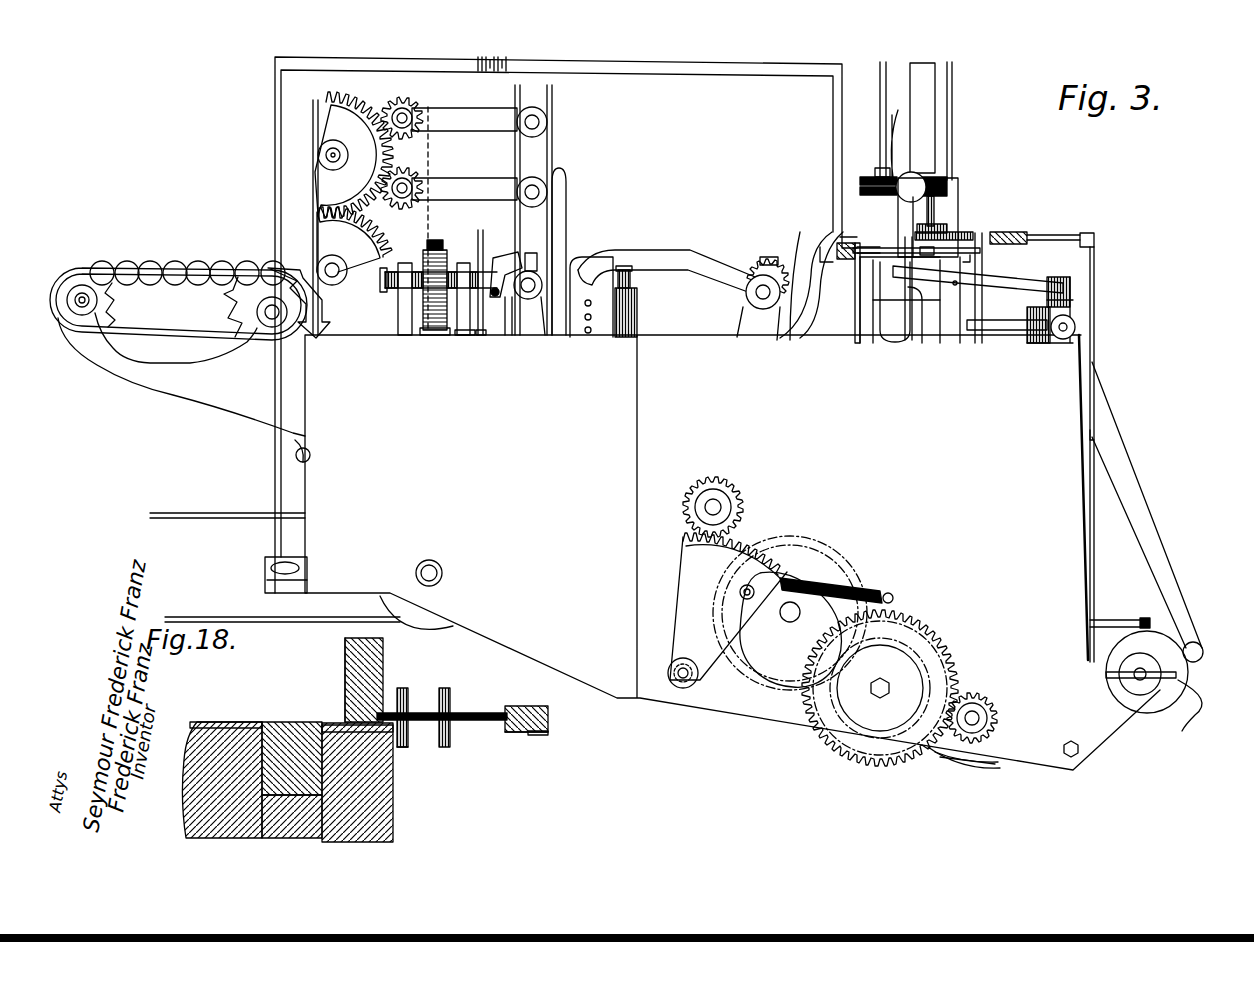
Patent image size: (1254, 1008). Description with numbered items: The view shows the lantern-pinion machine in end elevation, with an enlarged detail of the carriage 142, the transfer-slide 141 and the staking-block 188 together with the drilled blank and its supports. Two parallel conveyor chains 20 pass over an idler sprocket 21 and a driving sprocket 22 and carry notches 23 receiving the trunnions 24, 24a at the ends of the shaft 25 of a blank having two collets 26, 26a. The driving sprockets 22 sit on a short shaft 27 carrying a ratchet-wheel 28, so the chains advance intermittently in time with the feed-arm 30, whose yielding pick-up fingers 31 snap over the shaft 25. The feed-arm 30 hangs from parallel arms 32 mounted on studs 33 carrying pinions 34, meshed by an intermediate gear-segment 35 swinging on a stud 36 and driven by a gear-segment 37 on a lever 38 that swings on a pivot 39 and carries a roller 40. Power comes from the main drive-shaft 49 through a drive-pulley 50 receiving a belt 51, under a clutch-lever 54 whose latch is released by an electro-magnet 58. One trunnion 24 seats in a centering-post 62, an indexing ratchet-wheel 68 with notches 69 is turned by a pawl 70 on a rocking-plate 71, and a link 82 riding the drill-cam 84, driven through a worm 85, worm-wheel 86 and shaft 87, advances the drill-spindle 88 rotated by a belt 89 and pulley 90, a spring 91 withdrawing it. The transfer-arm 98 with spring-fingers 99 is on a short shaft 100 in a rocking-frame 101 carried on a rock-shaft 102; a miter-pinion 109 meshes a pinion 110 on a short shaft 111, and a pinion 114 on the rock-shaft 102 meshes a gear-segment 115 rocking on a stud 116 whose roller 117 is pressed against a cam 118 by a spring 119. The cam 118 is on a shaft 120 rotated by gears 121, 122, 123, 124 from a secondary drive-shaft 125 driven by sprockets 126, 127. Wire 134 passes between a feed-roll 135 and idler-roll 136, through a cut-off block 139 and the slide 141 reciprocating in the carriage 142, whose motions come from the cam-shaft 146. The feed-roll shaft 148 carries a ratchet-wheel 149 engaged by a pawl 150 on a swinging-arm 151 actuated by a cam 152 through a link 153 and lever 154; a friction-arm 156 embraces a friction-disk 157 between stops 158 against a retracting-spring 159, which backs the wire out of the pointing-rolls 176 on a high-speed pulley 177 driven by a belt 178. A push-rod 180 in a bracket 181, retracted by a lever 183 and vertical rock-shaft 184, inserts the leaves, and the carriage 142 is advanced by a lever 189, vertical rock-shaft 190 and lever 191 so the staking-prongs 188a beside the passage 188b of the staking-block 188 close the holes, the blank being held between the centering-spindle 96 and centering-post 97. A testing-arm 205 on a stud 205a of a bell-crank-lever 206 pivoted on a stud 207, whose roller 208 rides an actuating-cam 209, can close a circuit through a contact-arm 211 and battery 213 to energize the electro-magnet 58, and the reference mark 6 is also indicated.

In FIG. 3, the conveyor chains 20 is at (133, 333).
In FIG. 3, the idler sprocket 21 is at (112, 288).
In FIG. 3, the driving sprocket 22 is at (240, 318).
In FIG. 3, the notches 23 is at (168, 340).
In FIG. 3, the trunnion 24 is at (127, 272).
In FIG. 18, the trunnion 24 is at (383, 690).
In FIG. 3, the collet 26 is at (104, 261).
In FIG. 18, the collet 26 is at (402, 747).
In FIG. 3, the short shaft 27 is at (270, 330).
In FIG. 3, the ratchet-wheel 28 is at (227, 305).
In FIG. 3, the feed-arm 30 is at (560, 180).
In FIG. 3, the yielding pick-up fingers 31 is at (530, 257).
In FIG. 3, the parallel arms 32 is at (478, 123).
In FIG. 3, the studs 33 is at (420, 108).
In FIG. 3, the pinions 34 is at (404, 117).
In FIG. 3, the intermediate gear-segment 35 is at (330, 112).
In FIG. 3, the stud 36 is at (327, 163).
In FIG. 3, the gear-segment 37 is at (327, 243).
In FIG. 3, the lever 38 is at (333, 328).
In FIG. 3, the pivot 39 is at (333, 278).
In FIG. 3, the roller 40 is at (303, 463).
In FIG. 3, the main drive-shaft 49 is at (442, 571).
In FIG. 3, the drive-pulley 50 is at (432, 622).
In FIG. 3, the belt 51 is at (277, 622).
In FIG. 3, the clutch-lever 54 is at (267, 572).
In FIG. 3, the electro-magnet 58 is at (295, 577).
In FIG. 3, the centering-post 62 is at (522, 335).
In FIG. 3, the indexing ratchet-wheel 68 is at (492, 335).
In FIG. 3, the notches 69 is at (517, 253).
In FIG. 3, the pawl 70 is at (577, 257).
In FIG. 3, the rocking-plate 71 is at (603, 317).
In FIG. 3, the link 82 is at (467, 337).
In FIG. 3, the drill-cam 84 is at (480, 227).
In FIG. 3, the worm 85 is at (440, 267).
In FIG. 3, the worm-wheel 86 is at (423, 242).
In FIG. 3, the shaft 87 is at (390, 295).
In FIG. 3, the drill-spindle 88 is at (547, 335).
In FIG. 3, the belt 89 is at (552, 97).
In FIG. 3, the pulley 90 is at (530, 335).
In FIG. 3, the spring 91 is at (480, 336).
In FIG. 3, the transfer-arm 98 is at (663, 257).
In FIG. 3, the spring-fingers 99 is at (577, 267).
In FIG. 3, the short shaft 100 is at (760, 293).
In FIG. 3, the rocking-frame 101 is at (750, 322).
In FIG. 3, the rock-shaft 102 is at (715, 507).
In FIG. 3, the miter-pinion 109 is at (783, 340).
In FIG. 3, the pinion 110 is at (757, 270).
In FIG. 3, the short shaft 111 is at (768, 255).
In FIG. 3, the pinion 114 is at (733, 527).
In FIG. 3, the gear-segment 115 is at (687, 553).
In FIG. 3, the stud 116 is at (680, 685).
In FIG. 3, the roller 117 is at (747, 595).
In FIG. 3, the cam 118 is at (787, 667).
In FIG. 3, the spring 119 is at (873, 588).
In FIG. 3, the shaft 120 is at (797, 603).
In FIG. 3, the gear 121 is at (807, 555).
In FIG. 3, the gear 122 is at (877, 718).
In FIG. 3, the gear 123 is at (902, 742).
In FIG. 3, the gear 124 is at (952, 738).
In FIG. 3, the secondary drive-shaft 125 is at (976, 719).
In FIG. 3, the sprocket 126 is at (965, 768).
In FIG. 3, the sprocket 127 is at (957, 760).
In FIG. 3, the wire 134 is at (960, 178).
In FIG. 3, the feed-roll 135 is at (952, 190).
In FIG. 3, the idler-roll 136 is at (858, 180).
In FIG. 3, the cut-off block 139 is at (958, 173).
In FIG. 3, the combined leaf cut-off and transfer-slide 141 is at (928, 85).
In FIG. 18, the combined leaf cut-off and transfer-slide 141 is at (283, 727).
In FIG. 3, the carriage 142 is at (940, 337).
In FIG. 18, the carriage 142 is at (215, 743).
In FIG. 3, the cam-shaft 146 is at (1143, 680).
In FIG. 3, the shaft 148 is at (962, 203).
In FIG. 3, the ratchet-wheel 149 is at (940, 232).
In FIG. 3, the pawl 150 is at (937, 225).
In FIG. 3, the swinging-arm 151 is at (947, 237).
In FIG. 3, the cam 152 is at (1166, 707).
In FIG. 3, the link 153 is at (1063, 235).
In FIG. 3, the lever 154 is at (1086, 378).
In FIG. 3, the friction-arm 156 is at (880, 250).
In FIG. 3, the friction-disk 157 is at (980, 257).
In FIG. 3, the stops 158 is at (850, 317).
In FIG. 3, the retracting-spring 159 is at (882, 170).
In FIG. 3, the pointing-rolls 176 is at (898, 170).
In FIG. 3, the high-speed pulley 177 is at (950, 157).
In FIG. 3, the belt 178 is at (880, 77).
In FIG. 3, the push-rod 180 is at (917, 333).
In FIG. 3, the bracket 181 is at (928, 337).
In FIG. 3, the lever 183 is at (1073, 297).
In FIG. 3, the vertical rock-shaft 184 is at (1073, 280).
In FIG. 3, the lever 189 is at (1003, 345).
In FIG. 3, the vertical rock-shaft 190 is at (1073, 305).
In FIG. 3, the lever 191 is at (1106, 620).
In FIG. 3, the testing-arm 205 is at (887, 273).
In FIG. 3, the stud 205a is at (963, 278).
In FIG. 3, the bell-crank-lever 206 is at (1133, 493).
In FIG. 3, the stud 207 is at (1080, 327).
In FIG. 3, the roller 208 is at (1201, 647).
In FIG. 3, the actuating-cam 209 is at (1195, 709).
In FIG. 3, the contact-arm 211 is at (847, 237).
In FIG. 3, the battery 213 is at (487, 80).
In FIG. 3, the section line 6 is at (890, 263).
In FIG. 18, the shaft 25 is at (490, 713).
In FIG. 18, the collet 26a is at (452, 692).
In FIG. 18, the trunnion 24a is at (513, 733).
In FIG. 18, the centering-spindle 96 is at (533, 736).
In FIG. 18, the centering-post 97 is at (353, 667).
In FIG. 18, the staking-block 188 is at (383, 808).
In FIG. 18, the staking-prongs 188a is at (397, 750).
In FIG. 18, the passage 188b is at (338, 732).